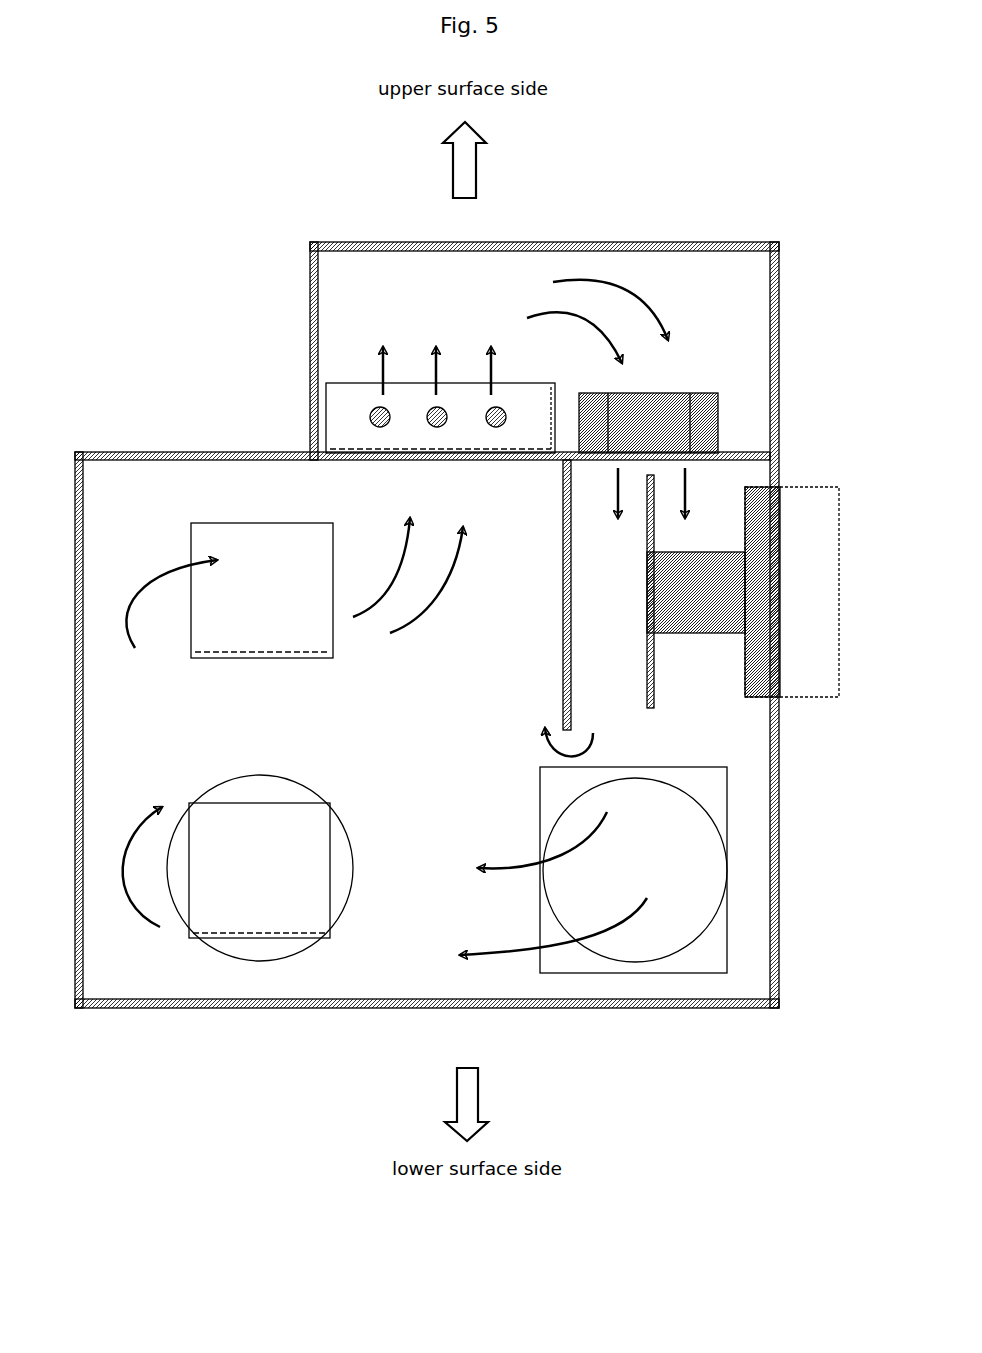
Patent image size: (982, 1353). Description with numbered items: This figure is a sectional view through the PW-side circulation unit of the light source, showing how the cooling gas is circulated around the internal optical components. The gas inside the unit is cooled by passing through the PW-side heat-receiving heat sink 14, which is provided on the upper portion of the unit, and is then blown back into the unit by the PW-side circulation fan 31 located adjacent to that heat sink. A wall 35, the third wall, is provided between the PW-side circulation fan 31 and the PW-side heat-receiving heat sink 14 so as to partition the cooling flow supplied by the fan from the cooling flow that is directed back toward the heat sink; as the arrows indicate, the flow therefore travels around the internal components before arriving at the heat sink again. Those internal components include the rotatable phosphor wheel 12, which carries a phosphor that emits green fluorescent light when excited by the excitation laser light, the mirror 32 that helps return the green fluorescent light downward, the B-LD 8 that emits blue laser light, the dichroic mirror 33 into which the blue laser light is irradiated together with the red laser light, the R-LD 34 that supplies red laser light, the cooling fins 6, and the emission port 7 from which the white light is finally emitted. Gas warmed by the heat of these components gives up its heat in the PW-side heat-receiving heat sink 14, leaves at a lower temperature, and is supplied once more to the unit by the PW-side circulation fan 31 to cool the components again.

The PW-side heat-receiving heat sink 14 is at (345, 408).
The PW-side circulation fan 31 is at (703, 413).
The mirror 32 is at (232, 526).
The wall 35 is at (564, 597).
The phosphor wheel 12 is at (658, 623).
The cooling fins 6 is at (807, 688).
The R-LD 34 is at (618, 958).
The B-LD 8 is at (678, 973).
The emission port 7 is at (254, 960).
The dichroic mirror 33 is at (215, 918).